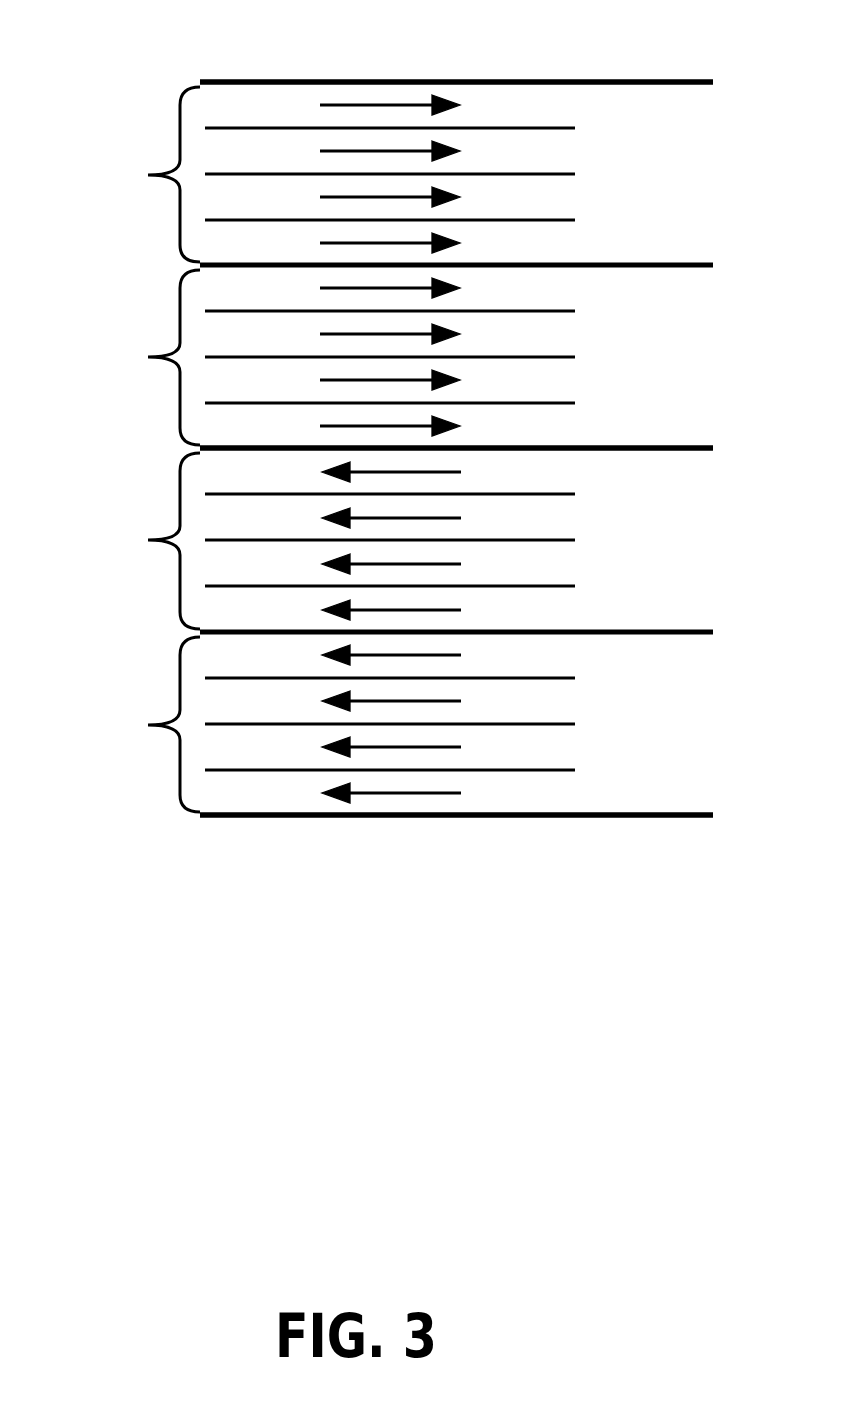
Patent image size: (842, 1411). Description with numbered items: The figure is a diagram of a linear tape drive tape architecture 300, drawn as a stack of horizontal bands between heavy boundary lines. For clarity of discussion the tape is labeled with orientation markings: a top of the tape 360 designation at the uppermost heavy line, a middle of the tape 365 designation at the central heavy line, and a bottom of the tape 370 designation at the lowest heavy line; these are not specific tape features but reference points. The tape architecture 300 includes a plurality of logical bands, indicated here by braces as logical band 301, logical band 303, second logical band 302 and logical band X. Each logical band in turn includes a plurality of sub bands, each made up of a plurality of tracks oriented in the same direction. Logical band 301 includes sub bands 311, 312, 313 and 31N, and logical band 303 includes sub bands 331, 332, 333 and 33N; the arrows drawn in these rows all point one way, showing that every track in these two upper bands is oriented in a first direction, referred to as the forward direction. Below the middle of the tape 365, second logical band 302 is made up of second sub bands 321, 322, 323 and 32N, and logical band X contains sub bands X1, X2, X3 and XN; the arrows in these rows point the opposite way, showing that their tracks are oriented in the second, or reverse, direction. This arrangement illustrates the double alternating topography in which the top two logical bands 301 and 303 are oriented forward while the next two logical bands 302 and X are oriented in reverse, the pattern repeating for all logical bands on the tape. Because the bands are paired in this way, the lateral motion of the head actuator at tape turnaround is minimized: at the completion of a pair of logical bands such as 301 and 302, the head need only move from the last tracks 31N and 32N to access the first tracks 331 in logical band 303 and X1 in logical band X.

The tape architecture 300 is at (533, 80).
The top of the tape 360 is at (203, 82).
The middle of the tape 365 is at (200, 449).
The bottom of the tape 370 is at (197, 815).
The logical band 301 is at (327, 174).
The second logical band 302 is at (327, 541).
The logical band 303 is at (327, 357).
The logical band X is at (341, 724).
The sub band 311 is at (390, 110).
The sub band 312 is at (390, 156).
The sub band 313 is at (390, 202).
The sub band 31N is at (332, 246).
The sub band 331 is at (390, 293).
The sub band 332 is at (390, 339).
The sub band 333 is at (390, 385).
The sub band 33N is at (332, 429).
The second sub band 321 is at (390, 476).
The second sub band 322 is at (390, 522).
The second sub band 323 is at (390, 568).
The second sub band 32N is at (333, 612).
The sub band X1 is at (390, 660).
The sub band X2 is at (390, 706).
The sub band X3 is at (390, 752).
The sub band XN is at (339, 796).